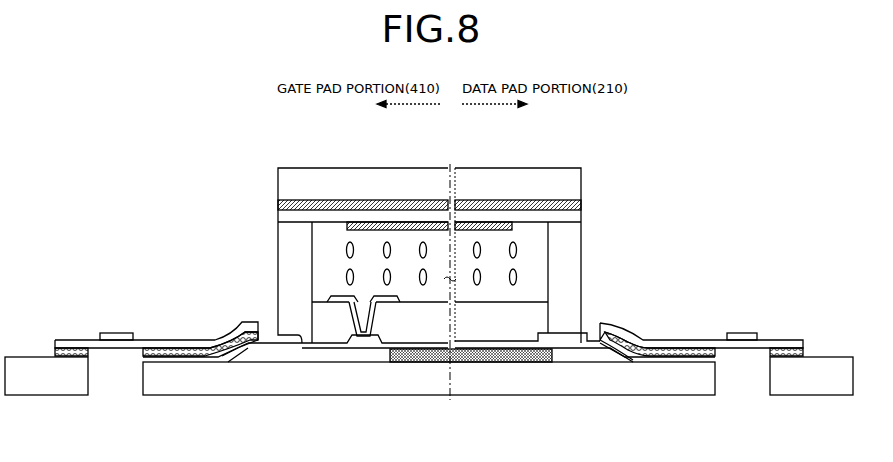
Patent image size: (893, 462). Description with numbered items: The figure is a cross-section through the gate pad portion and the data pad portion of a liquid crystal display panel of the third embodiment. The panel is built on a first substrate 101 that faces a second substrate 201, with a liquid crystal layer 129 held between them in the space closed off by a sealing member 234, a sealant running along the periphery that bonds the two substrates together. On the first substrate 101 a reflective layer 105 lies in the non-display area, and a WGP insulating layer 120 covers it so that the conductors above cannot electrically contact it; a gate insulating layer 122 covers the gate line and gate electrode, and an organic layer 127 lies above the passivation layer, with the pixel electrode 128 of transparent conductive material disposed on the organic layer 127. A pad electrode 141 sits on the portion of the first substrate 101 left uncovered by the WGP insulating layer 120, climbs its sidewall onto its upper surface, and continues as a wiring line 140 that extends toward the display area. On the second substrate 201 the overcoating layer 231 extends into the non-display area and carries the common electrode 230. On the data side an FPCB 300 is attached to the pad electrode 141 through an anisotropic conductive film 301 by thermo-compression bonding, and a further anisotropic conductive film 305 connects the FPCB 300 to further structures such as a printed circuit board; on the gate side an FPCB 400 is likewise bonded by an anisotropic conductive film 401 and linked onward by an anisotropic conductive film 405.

The first substrate 101 is at (561, 386).
The reflective layer 105 is at (513, 356).
The WGP insulating layer 120 is at (600, 350).
The gate insulating layer 122 is at (476, 348).
The organic layer 127 is at (283, 313).
The pixel electrode 128 is at (331, 296).
The liquid crystal layer 129 is at (392, 243).
The wiring line 140 is at (563, 333).
The pad electrode 141 is at (265, 346).
The second substrate 201 is at (530, 172).
The common electrode 230 is at (278, 205).
The overcoating layer 231 is at (493, 222).
The sealing member 234 is at (296, 232).
The FPCB 300 is at (737, 338).
The anisotropic conductive film 301 is at (720, 345).
The anisotropic conductive film 305 is at (805, 352).
The FPCB 400 is at (120, 338).
The anisotropic conductive film 401 is at (188, 348).
The anisotropic conductive film 405 is at (55, 352).